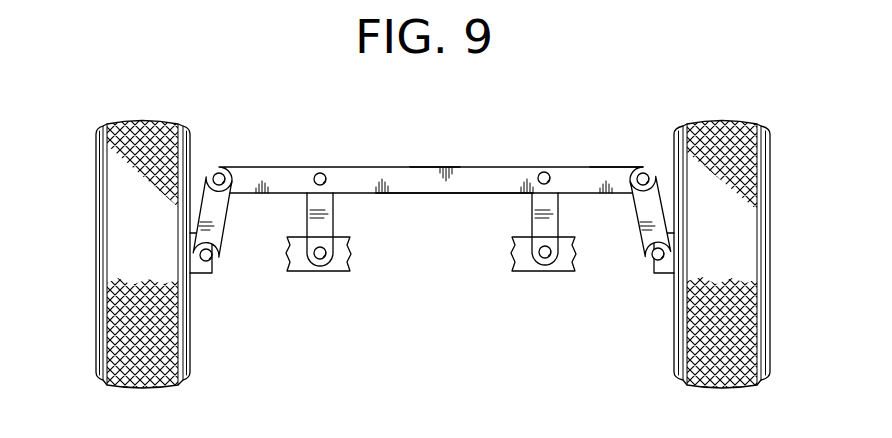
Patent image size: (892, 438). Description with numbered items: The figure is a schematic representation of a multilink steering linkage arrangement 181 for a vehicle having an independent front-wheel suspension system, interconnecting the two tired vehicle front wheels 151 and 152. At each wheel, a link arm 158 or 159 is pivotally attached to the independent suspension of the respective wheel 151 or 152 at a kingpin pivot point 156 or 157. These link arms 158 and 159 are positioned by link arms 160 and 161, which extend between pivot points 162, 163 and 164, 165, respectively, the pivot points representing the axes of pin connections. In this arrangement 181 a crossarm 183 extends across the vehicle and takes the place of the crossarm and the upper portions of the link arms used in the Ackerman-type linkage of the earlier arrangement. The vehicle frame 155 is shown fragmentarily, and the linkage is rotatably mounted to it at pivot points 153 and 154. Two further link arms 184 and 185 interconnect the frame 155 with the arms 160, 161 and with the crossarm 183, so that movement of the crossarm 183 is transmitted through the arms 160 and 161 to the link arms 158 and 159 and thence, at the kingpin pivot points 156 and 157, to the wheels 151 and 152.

The vehicle front wheel 151 is at (112, 244).
The vehicle front wheel 152 is at (763, 299).
The pivot point 153 is at (319, 260).
The pivot point 154 is at (546, 259).
The vehicle frame 155 is at (350, 266).
The kingpin pivot point 156 is at (210, 262).
The kingpin pivot point 157 is at (658, 261).
The link arm 158 is at (221, 212).
The link arm 159 is at (641, 216).
The link arm 160 is at (271, 173).
The link arm 161 is at (619, 170).
The pivot point 162 is at (219, 172).
The pivot point 163 is at (325, 174).
The pivot point 164 is at (656, 183).
The pivot point 165 is at (549, 172).
The multilink arrangement 181 is at (420, 166).
The crossarm 183 is at (500, 172).
The link arm 184 is at (328, 228).
The link arm 185 is at (536, 216).